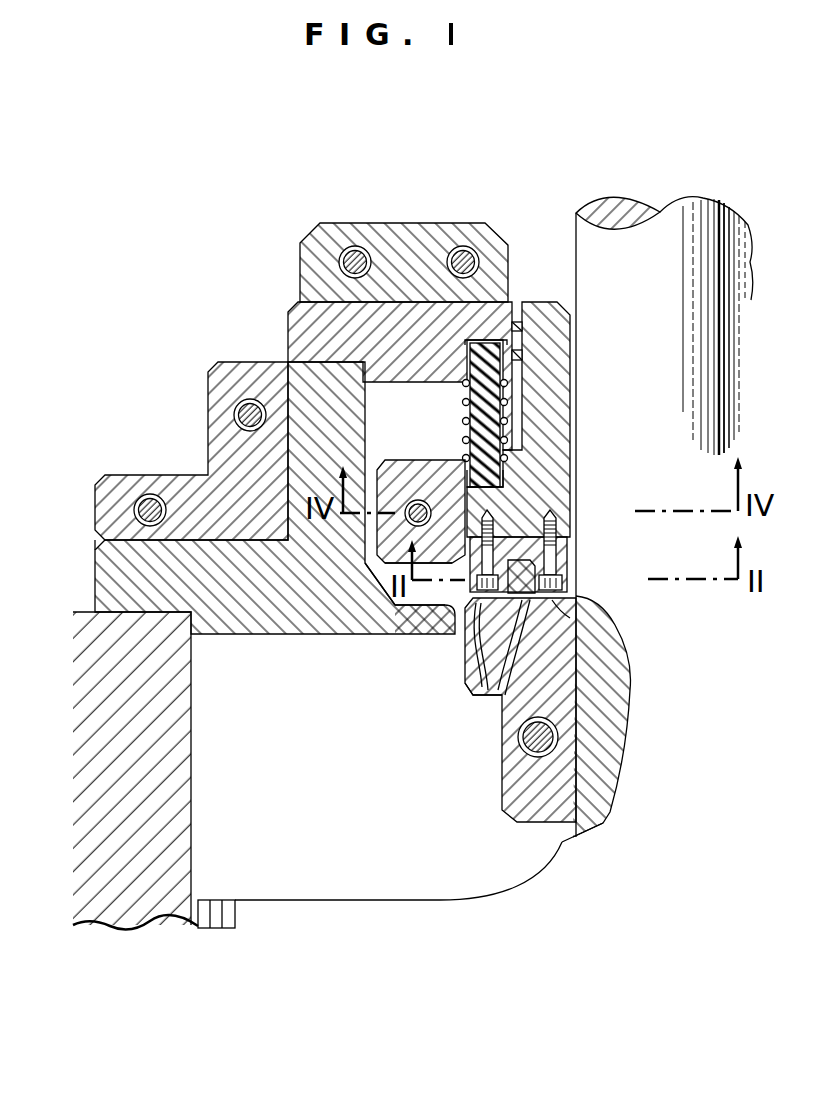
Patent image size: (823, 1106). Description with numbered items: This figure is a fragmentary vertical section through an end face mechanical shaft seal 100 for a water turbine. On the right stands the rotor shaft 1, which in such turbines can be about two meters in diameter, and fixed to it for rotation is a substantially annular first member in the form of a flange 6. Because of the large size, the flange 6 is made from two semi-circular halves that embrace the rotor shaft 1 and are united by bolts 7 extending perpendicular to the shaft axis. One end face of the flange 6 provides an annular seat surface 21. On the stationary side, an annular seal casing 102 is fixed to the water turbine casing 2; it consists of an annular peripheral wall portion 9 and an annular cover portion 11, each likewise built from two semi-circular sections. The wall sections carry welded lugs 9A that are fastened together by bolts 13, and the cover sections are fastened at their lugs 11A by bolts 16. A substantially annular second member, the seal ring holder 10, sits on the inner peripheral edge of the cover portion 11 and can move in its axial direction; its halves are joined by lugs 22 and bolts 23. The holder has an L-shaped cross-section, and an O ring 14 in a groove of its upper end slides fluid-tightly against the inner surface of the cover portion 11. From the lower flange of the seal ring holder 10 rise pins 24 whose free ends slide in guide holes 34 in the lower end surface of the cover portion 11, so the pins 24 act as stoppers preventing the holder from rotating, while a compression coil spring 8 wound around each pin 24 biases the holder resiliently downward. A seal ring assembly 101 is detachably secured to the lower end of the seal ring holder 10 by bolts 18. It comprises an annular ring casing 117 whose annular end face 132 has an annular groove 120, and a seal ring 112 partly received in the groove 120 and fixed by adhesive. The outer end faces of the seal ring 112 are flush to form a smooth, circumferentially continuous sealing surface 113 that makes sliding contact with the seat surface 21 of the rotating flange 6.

The rotor shaft 1 is at (577, 243).
The water turbine casing 2 is at (185, 707).
The first member (flange) 6 is at (513, 790).
The bolts 7 is at (559, 722).
The compression coil spring 8 is at (508, 418).
The peripheral wall portion 9 is at (128, 573).
The lugs 9A is at (270, 362).
The seal ring holder 10 is at (540, 301).
The cover portion 11 is at (302, 318).
The lugs 11A is at (412, 238).
The bolts 13 is at (244, 418).
The O ring 14 is at (523, 326).
The bolts 16 is at (360, 246).
The bolts 18 is at (442, 606).
The seat surface 21 is at (465, 673).
The lugs 22 is at (398, 458).
The bolts 23 is at (368, 592).
The pins 24 is at (482, 406).
The guide holes 34 is at (464, 386).
The end face mechanical shaft seal 100 is at (258, 225).
The seal ring assembly 101 is at (427, 605).
The seal casing 102 is at (203, 352).
The seal ring 112 is at (483, 703).
The sealing surface 113 is at (500, 697).
The ring casing 117 is at (432, 591).
The groove 120 is at (518, 537).
The end face 132 is at (552, 600).